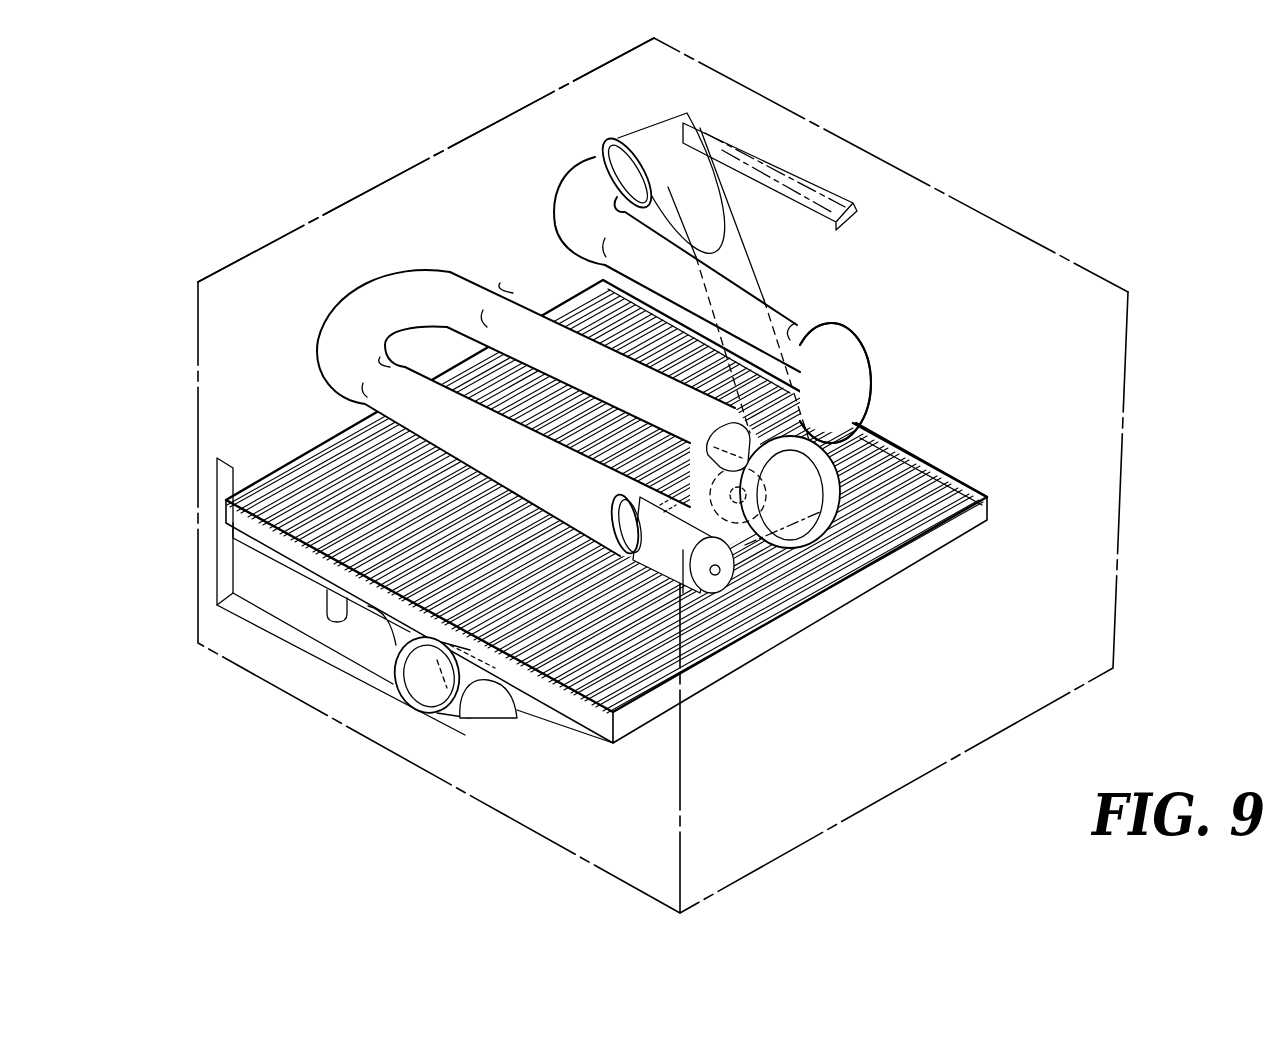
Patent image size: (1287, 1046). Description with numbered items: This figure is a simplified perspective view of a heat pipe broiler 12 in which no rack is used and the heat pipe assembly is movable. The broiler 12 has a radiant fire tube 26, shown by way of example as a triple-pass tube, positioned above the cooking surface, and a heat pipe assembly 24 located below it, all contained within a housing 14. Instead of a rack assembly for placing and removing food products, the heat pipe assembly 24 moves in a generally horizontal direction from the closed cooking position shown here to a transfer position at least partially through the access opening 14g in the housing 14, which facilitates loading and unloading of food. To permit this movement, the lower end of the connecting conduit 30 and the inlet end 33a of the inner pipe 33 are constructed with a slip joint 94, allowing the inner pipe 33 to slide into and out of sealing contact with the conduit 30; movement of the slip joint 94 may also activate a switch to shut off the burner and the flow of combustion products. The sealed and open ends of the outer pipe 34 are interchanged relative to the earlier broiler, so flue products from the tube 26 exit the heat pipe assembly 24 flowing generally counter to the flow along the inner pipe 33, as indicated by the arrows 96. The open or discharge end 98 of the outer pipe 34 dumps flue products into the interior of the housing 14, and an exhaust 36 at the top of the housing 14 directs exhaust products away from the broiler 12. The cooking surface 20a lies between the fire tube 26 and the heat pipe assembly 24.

The broiler 12 is at (996, 188).
The housing 14 is at (334, 205).
The access opening 14g is at (223, 572).
The grate tray 20a is at (600, 738).
The heat pipe assembly 24 is at (529, 718).
The radiant fire tube 26 is at (480, 254).
The connecting conduit 30 is at (756, 263).
The inner pipe 33 is at (620, 505).
The inlet end 33a is at (814, 458).
The outer pipe 34 is at (402, 637).
The exhaust 36 is at (855, 212).
The slip joint 94 is at (735, 450).
The arrows 96 is at (495, 718).
The open or discharge end 98 is at (807, 436).